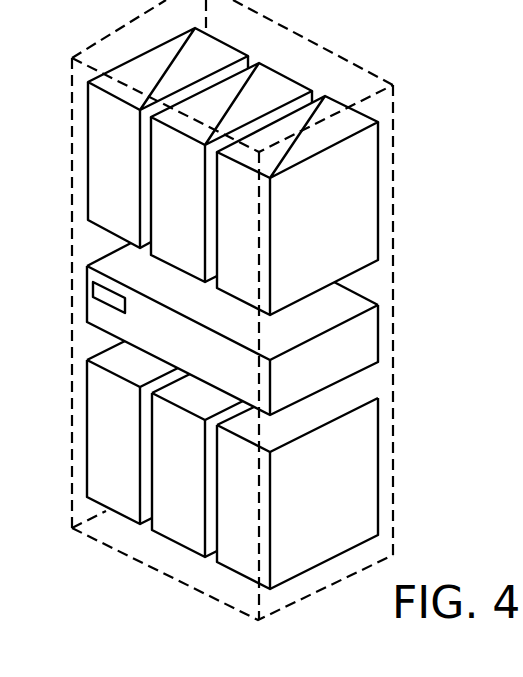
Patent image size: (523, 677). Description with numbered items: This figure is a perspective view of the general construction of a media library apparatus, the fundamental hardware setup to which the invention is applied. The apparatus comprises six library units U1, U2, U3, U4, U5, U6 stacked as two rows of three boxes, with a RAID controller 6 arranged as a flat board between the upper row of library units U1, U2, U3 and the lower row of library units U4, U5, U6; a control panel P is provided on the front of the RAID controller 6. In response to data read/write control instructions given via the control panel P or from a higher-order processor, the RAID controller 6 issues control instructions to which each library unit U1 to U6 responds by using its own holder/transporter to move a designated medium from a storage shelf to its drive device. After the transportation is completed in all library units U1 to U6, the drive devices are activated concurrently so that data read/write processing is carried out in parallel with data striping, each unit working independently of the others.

The library unit U1 is at (210, 42).
The library unit U2 is at (277, 65).
The library unit U3 is at (345, 118).
The library unit U4 is at (118, 502).
The library unit U5 is at (185, 540).
The library unit U6 is at (248, 567).
The RAID controller 6 is at (367, 340).
The control panel P is at (100, 295).